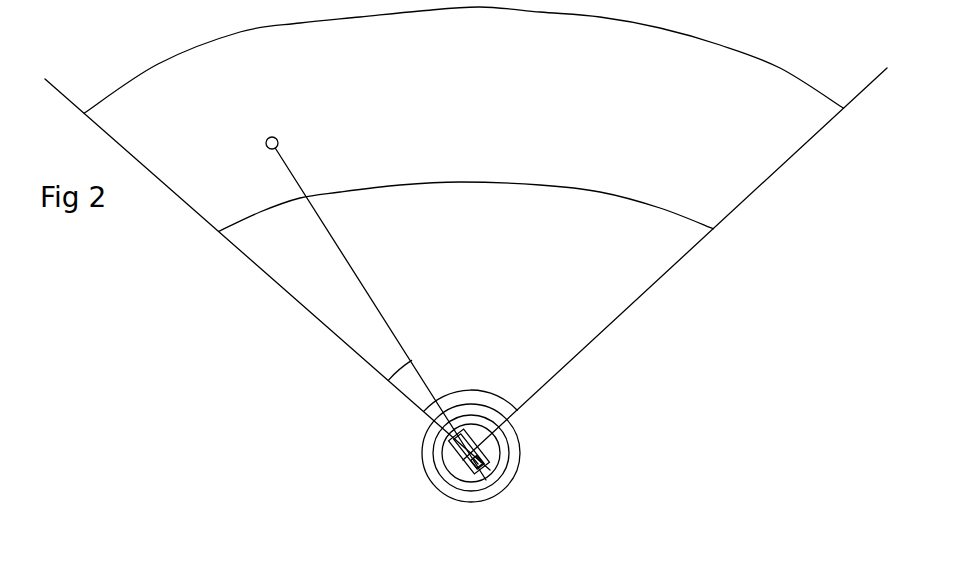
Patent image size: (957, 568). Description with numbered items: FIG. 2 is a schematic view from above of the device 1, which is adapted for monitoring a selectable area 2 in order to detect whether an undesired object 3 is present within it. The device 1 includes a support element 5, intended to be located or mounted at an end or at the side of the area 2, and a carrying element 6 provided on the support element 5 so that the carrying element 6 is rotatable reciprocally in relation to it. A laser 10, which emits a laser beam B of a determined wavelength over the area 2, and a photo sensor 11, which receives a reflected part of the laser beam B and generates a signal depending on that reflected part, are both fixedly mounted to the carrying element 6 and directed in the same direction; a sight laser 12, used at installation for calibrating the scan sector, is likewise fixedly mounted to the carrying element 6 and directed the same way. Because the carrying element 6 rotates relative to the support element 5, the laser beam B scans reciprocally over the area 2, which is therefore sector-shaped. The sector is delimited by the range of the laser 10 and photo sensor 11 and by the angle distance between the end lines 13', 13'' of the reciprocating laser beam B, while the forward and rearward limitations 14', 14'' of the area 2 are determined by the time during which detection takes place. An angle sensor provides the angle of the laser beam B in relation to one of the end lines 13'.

The device 1 is at (523, 439).
The area 2 is at (455, 116).
The undesired object 3 is at (278, 137).
The support element 5 is at (433, 467).
The carrying element 6 is at (455, 469).
The laser 10 is at (467, 466).
The photo sensor 11 is at (492, 463).
The sight laser 12 is at (485, 466).
The end line 13' is at (267, 274).
The end line 13'' is at (675, 264).
The forward limitation 14' is at (466, 227).
The rearward limitation 14'' is at (444, 60).
The laser beam B is at (394, 332).